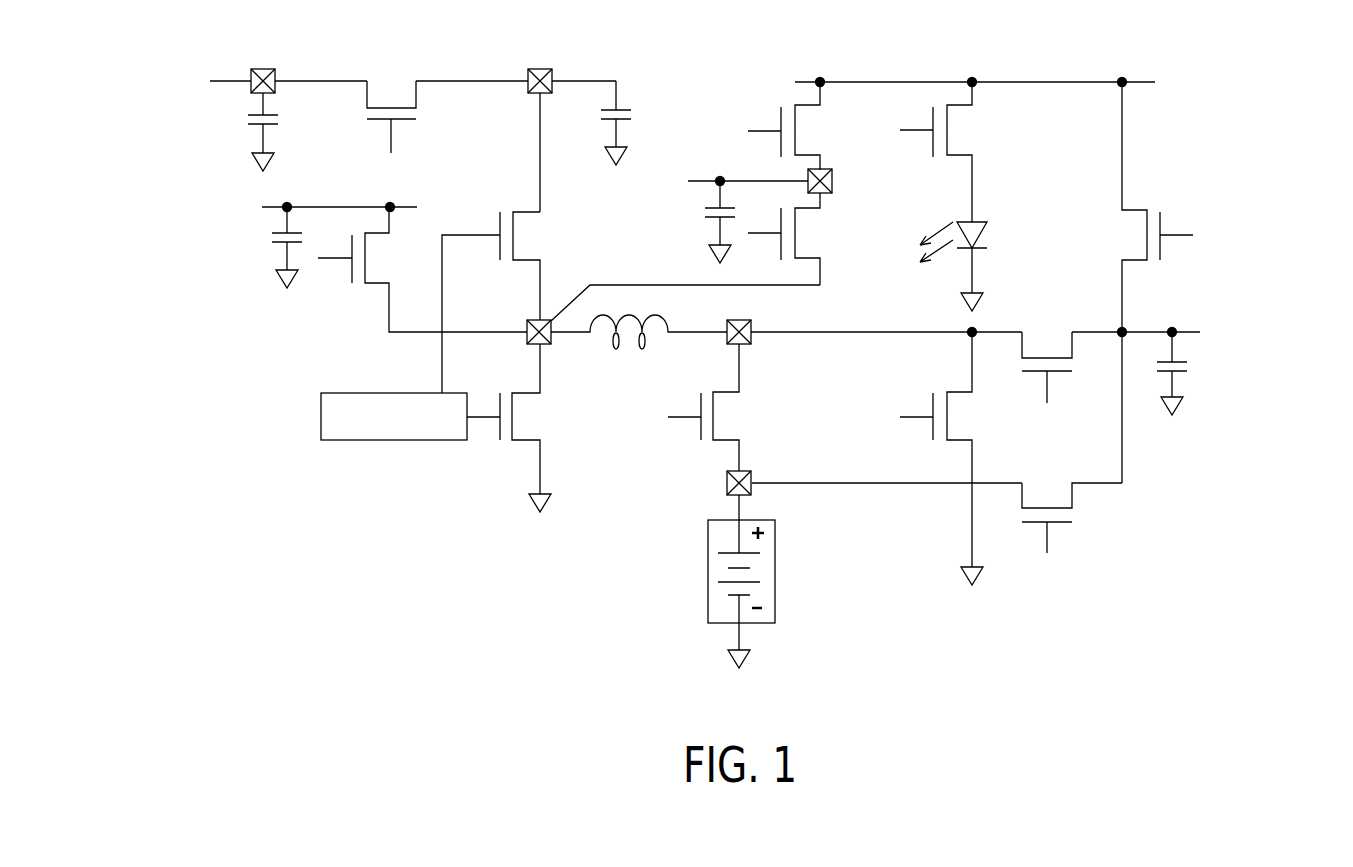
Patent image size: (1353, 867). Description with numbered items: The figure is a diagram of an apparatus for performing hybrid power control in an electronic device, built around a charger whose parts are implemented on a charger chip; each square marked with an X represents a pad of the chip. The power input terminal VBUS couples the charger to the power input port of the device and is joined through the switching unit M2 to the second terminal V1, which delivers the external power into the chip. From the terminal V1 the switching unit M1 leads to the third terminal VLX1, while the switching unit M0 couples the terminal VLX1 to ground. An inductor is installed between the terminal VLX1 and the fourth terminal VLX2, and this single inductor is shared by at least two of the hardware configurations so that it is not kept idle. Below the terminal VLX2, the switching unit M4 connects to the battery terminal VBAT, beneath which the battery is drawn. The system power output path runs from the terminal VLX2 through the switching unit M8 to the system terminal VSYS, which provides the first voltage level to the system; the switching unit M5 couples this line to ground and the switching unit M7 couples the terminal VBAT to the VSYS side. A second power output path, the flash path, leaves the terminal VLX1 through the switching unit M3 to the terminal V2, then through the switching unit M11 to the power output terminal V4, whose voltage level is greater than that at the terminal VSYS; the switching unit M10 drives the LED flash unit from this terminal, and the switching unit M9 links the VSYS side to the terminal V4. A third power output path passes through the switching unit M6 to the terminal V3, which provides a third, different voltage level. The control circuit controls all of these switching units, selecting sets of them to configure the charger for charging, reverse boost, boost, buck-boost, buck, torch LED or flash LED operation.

The power input terminal VBUS is at (288, 102).
The switching unit M2 is at (391, 108).
The second terminal V1 is at (523, 132).
The terminal V3 is at (339, 233).
The switching unit M6 is at (422, 269).
The switching unit M1 is at (531, 266).
The switching unit M0 is at (517, 428).
The third terminal VLX1 is at (637, 317).
The power output terminal V4 is at (975, 69).
The switching unit M11 is at (802, 126).
The terminal V2 is at (760, 207).
The switching unit M3 is at (796, 239).
The switching unit M10 is at (957, 196).
The switching unit M9 is at (1142, 282).
The fourth terminal VLX2 is at (874, 323).
The switching unit M8 is at (1047, 358).
The system terminal VSYS is at (1173, 368).
The switching unit M5 is at (949, 458).
The switching unit M4 is at (717, 407).
The battery terminal VBAT is at (836, 569).
The switching unit M7 is at (1072, 509).